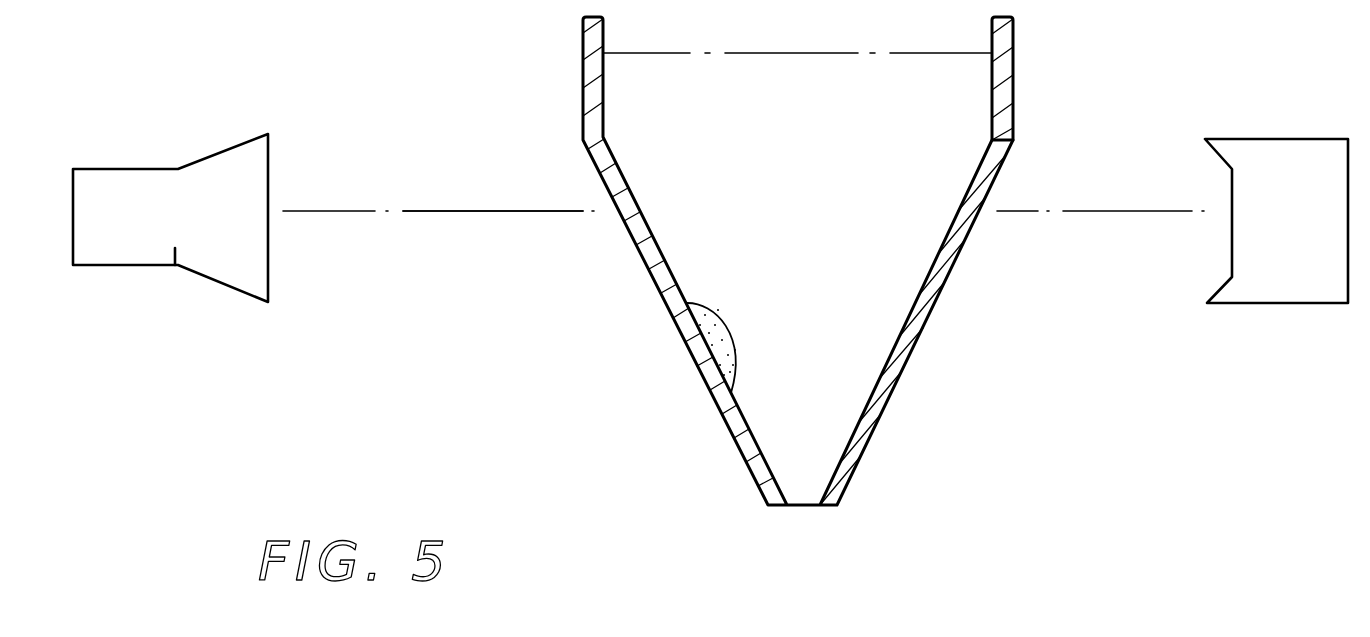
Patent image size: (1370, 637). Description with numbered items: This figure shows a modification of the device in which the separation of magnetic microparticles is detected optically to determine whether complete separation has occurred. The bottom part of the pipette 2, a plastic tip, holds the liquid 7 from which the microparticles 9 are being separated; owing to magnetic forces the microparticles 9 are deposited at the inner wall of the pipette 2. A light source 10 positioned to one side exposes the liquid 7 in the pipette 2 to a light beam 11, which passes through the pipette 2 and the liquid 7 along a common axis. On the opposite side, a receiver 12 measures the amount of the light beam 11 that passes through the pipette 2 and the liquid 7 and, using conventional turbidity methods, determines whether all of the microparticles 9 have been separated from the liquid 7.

The bottom part of the pipette 2 is at (912, 328).
The liquid 7 is at (938, 150).
The microparticles 9 is at (697, 365).
The light source 10 is at (132, 253).
The light beam 11 is at (510, 212).
The receiver 12 is at (1285, 284).